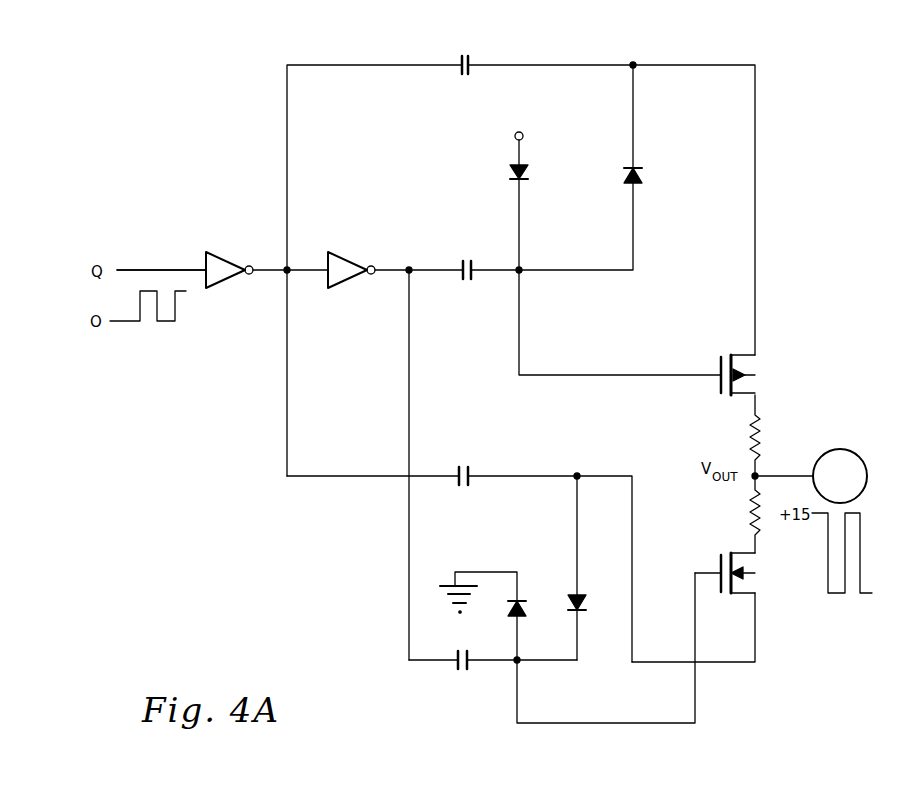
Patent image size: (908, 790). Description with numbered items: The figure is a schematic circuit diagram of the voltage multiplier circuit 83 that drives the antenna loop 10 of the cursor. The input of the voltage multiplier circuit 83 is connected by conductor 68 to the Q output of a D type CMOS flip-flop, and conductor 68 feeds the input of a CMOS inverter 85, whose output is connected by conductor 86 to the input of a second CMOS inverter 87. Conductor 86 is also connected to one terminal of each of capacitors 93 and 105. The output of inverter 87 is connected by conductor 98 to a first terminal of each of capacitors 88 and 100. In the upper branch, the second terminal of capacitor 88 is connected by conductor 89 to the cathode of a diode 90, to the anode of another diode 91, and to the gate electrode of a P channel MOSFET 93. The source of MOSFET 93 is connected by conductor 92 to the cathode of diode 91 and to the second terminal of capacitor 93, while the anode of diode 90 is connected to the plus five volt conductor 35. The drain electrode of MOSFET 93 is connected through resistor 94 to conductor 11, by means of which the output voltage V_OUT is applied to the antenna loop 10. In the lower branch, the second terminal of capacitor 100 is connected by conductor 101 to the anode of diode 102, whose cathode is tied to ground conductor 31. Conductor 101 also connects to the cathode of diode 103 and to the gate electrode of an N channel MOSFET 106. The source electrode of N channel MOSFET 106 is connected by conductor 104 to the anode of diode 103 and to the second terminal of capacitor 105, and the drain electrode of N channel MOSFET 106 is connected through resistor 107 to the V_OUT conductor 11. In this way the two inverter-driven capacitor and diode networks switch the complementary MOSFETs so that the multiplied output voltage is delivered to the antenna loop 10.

The conductor 68 is at (158, 268).
The CMOS inverter 85 is at (214, 250).
The conductor 86 is at (268, 268).
The second CMOS inverter 87 is at (347, 252).
The conductor 98 is at (418, 268).
The capacitor 88 is at (474, 264).
The conductor 89 is at (550, 268).
The capacitor / P channel MOSFET 93 is at (460, 72).
The conductor 92 is at (636, 62).
The +5 volt conductor 35 is at (524, 137).
The diode 90 is at (512, 179).
The diode 91 is at (641, 170).
The resistor 94 is at (759, 420).
The conductor 11 is at (790, 472).
The antenna loop 10 is at (840, 449).
The resistor 107 is at (751, 511).
The N channel MOSFET 106 is at (757, 558).
The capacitor 105 is at (468, 470).
The conductor 104 is at (580, 472).
The diode 103 is at (588, 603).
The ground conductor 31 is at (450, 584).
The diode 102 is at (510, 605).
The capacitor 100 is at (456, 664).
The conductor 101 is at (554, 661).
The voltage multiplier circuit 83 is at (349, 528).